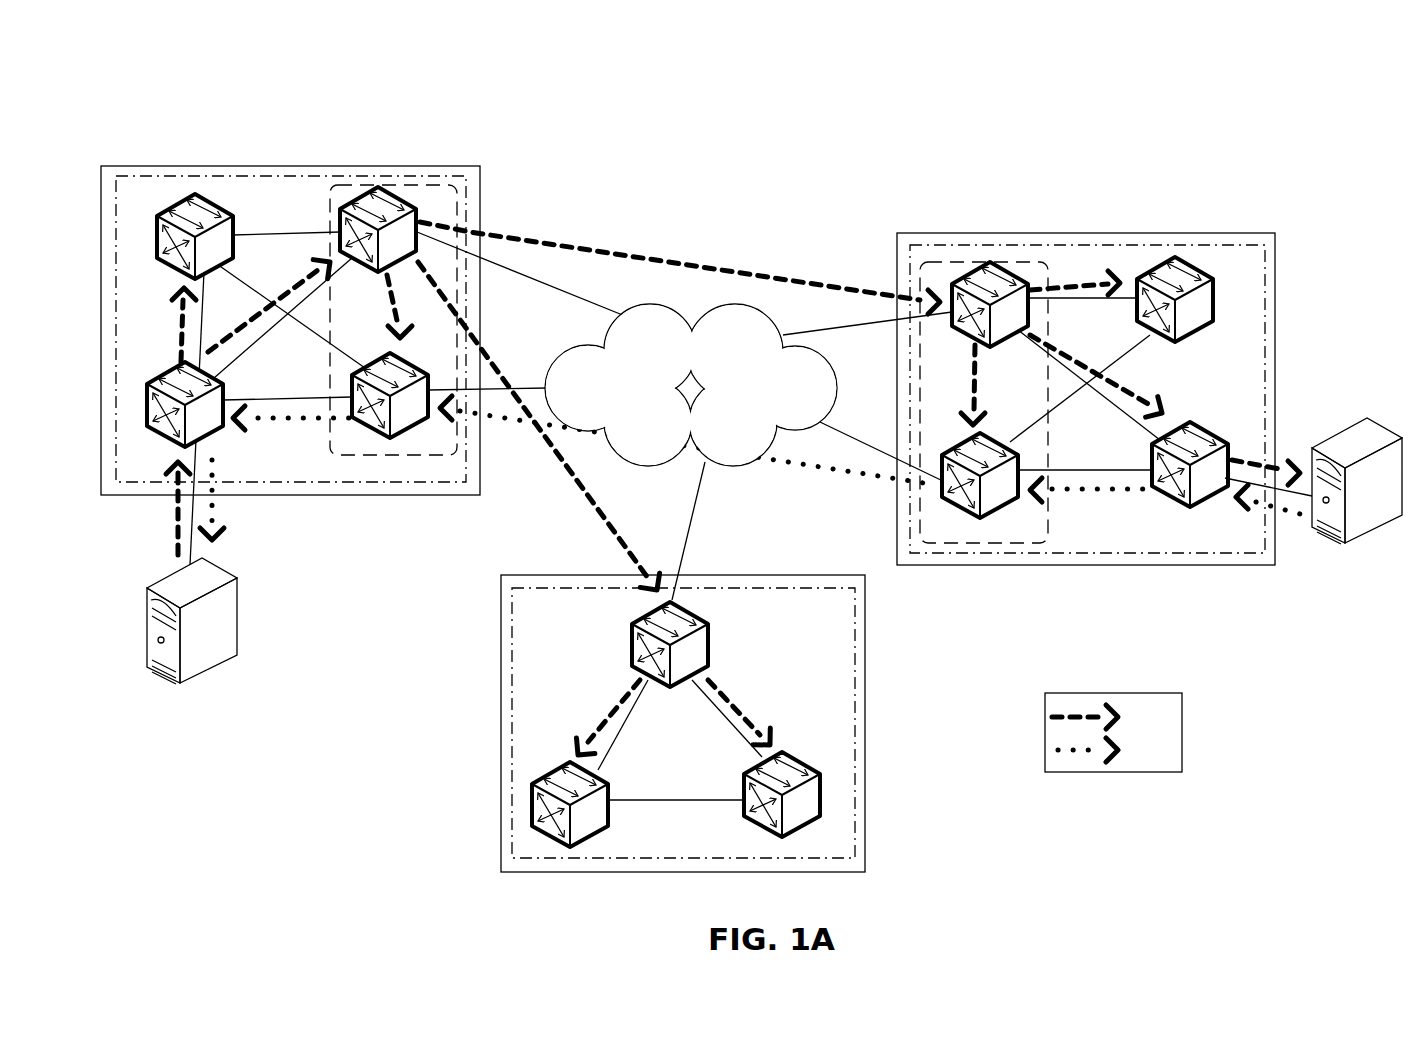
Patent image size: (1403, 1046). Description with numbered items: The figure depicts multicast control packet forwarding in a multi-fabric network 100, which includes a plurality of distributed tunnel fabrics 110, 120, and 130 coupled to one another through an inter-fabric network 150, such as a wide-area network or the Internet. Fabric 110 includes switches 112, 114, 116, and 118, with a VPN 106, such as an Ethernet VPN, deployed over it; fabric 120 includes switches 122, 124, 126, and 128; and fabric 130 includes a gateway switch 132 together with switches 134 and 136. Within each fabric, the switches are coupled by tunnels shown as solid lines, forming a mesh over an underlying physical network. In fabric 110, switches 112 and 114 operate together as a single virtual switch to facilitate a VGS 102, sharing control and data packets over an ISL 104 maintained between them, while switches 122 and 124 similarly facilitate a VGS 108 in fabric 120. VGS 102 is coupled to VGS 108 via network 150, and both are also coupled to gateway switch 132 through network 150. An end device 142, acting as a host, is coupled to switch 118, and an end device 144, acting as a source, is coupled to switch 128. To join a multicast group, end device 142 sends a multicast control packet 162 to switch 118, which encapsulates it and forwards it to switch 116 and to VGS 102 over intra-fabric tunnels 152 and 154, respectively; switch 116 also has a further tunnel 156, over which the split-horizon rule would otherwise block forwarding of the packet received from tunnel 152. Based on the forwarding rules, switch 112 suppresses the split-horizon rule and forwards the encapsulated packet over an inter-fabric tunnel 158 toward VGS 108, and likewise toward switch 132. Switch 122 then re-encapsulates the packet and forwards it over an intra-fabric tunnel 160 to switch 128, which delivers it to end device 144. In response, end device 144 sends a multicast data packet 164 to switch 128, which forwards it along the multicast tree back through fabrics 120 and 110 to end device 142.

The network 100 is at (1235, 133).
The VGS 102 is at (303, 426).
The ISL 104 is at (366, 280).
The VPN 106 is at (360, 497).
The VGS 108 is at (1060, 490).
The distributed tunnel fabric 110 is at (520, 339).
The switch 112 is at (407, 268).
The switch 114 is at (414, 358).
The switch 116 is at (157, 236).
The switch 118 is at (170, 372).
The distributed tunnel fabric 120 is at (1086, 369).
The switch 122 is at (963, 337).
The switch 124 is at (1000, 445).
The switch 126 is at (1213, 300).
The switch 128 is at (1222, 437).
The distributed tunnel fabric 130 is at (500, 737).
The gateway switch 132 is at (632, 636).
The switch 134 is at (608, 810).
The switch 136 is at (815, 768).
The end device 142 is at (237, 618).
The end device 144 is at (1378, 420).
The inter-fabric network 150 is at (676, 411).
The intra-fabric tunnel 152 is at (203, 318).
The intra-fabric tunnel 154 is at (288, 315).
The tunnel 156 is at (272, 236).
The inter-fabric tunnel 158 is at (572, 294).
The intra-fabric tunnel 160 is at (1102, 405).
The multicast control packet 162 is at (172, 522).
The multicast data packet 164 is at (1292, 516).